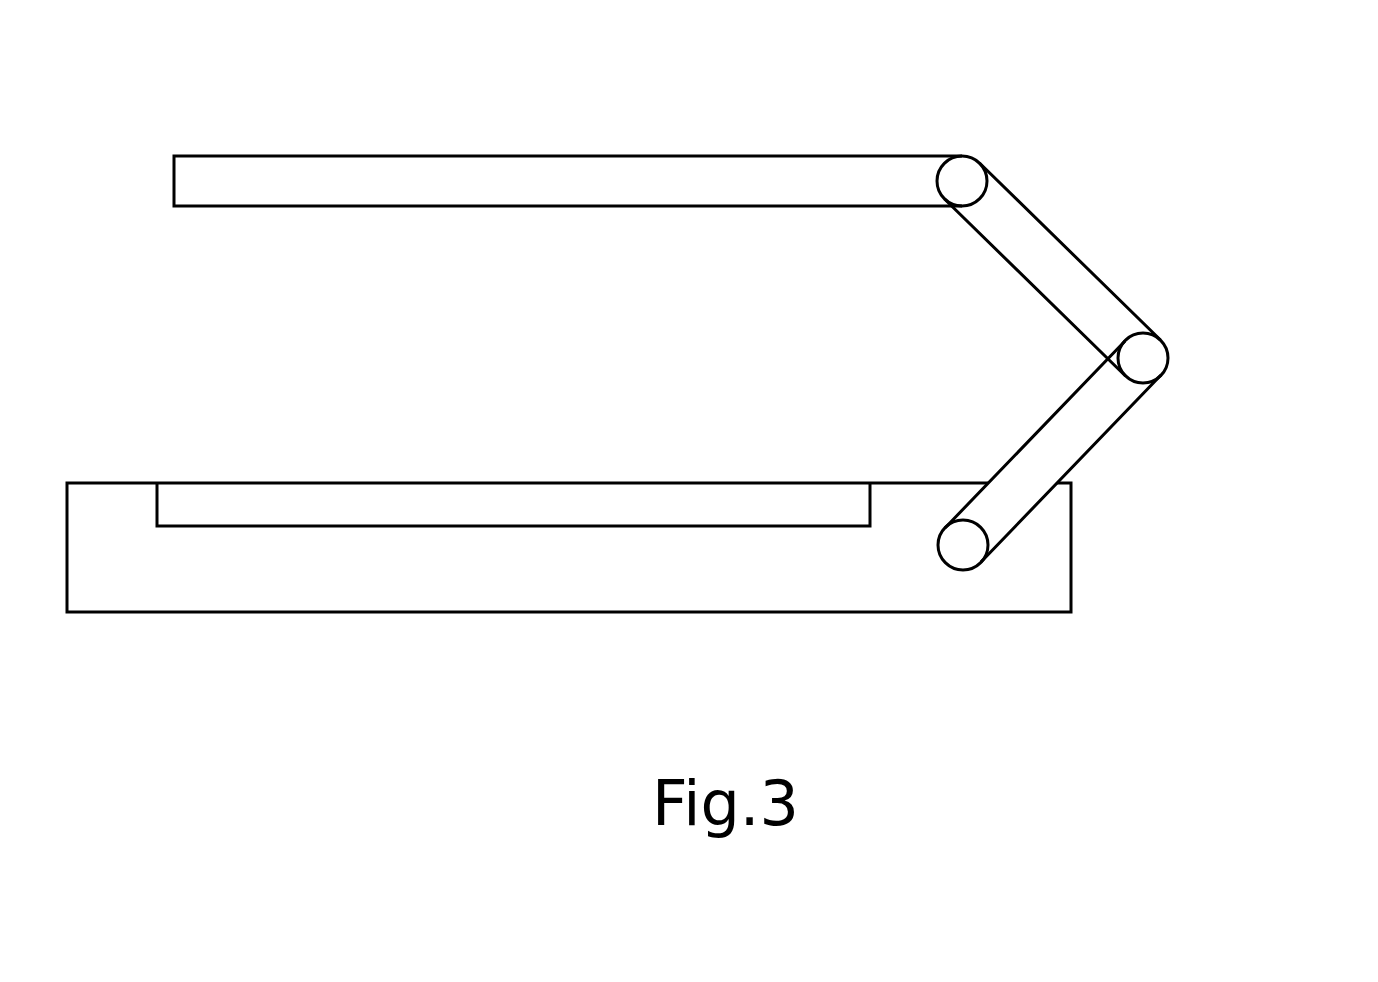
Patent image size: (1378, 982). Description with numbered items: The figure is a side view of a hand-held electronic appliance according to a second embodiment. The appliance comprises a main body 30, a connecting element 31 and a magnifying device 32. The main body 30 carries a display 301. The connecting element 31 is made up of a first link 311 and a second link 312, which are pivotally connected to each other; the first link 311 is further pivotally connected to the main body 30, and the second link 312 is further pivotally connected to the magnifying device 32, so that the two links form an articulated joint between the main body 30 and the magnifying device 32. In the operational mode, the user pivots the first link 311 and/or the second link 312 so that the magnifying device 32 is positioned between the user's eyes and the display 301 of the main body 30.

The main body 30 is at (805, 592).
The display 301 is at (573, 505).
The connecting element 31 is at (1150, 358).
The first link 311 is at (1055, 278).
The second link 312 is at (1076, 455).
The magnifying device 32 is at (735, 182).